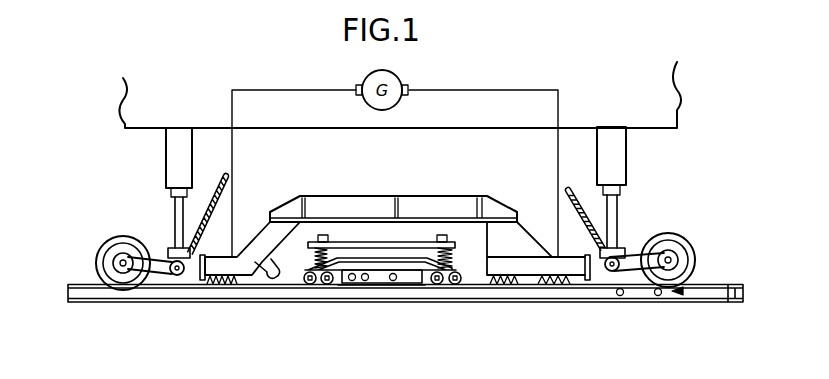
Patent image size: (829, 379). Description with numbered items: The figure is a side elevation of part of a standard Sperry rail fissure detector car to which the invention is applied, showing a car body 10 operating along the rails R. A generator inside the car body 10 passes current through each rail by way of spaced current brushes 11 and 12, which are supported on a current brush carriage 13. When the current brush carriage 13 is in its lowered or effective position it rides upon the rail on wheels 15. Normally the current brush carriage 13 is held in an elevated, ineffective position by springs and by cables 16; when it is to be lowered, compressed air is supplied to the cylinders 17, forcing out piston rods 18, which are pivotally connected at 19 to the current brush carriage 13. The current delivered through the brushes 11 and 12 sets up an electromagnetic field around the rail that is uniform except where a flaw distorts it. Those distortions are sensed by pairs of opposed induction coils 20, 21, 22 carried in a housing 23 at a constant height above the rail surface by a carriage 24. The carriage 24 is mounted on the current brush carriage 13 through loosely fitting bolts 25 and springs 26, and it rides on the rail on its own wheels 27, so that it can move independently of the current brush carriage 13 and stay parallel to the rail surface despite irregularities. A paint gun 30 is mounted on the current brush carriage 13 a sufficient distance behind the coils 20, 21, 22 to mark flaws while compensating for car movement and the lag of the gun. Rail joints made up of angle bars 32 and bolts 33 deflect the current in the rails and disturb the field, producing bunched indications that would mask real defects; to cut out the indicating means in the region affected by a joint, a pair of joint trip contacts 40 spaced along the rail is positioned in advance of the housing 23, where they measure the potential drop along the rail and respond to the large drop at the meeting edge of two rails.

The car body 10 is at (123, 124).
The current brush 11 is at (572, 285).
The current brush 12 is at (202, 280).
The current brush carriage 13 is at (467, 198).
The wheels 15 is at (690, 242).
The cables 16 is at (233, 188).
The cylinders 17 is at (173, 170).
The piston rods 18 is at (175, 215).
The pivotal connection 19 is at (176, 273).
The induction coils 20 is at (361, 299).
The induction coils 21 is at (365, 283).
The induction coils 22 is at (351, 283).
The housing 23 is at (393, 283).
The carriage 24 is at (309, 266).
The bolts 25 is at (322, 234).
The springs 26 is at (333, 249).
The wheels 27 is at (303, 283).
The paint gun 30 is at (230, 280).
The angle bars 32 is at (683, 294).
The bolts 33 is at (658, 296).
The joint trip contacts 40 is at (515, 285).
The rails R is at (78, 286).